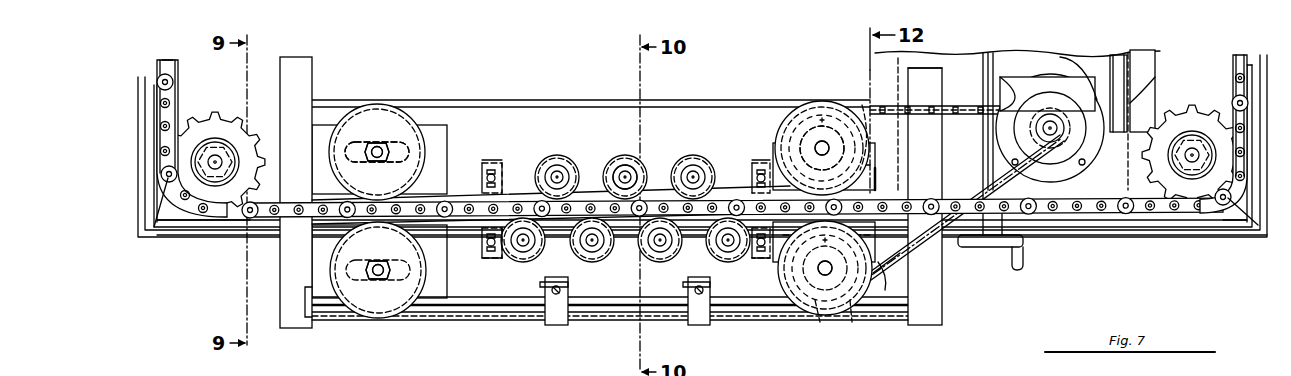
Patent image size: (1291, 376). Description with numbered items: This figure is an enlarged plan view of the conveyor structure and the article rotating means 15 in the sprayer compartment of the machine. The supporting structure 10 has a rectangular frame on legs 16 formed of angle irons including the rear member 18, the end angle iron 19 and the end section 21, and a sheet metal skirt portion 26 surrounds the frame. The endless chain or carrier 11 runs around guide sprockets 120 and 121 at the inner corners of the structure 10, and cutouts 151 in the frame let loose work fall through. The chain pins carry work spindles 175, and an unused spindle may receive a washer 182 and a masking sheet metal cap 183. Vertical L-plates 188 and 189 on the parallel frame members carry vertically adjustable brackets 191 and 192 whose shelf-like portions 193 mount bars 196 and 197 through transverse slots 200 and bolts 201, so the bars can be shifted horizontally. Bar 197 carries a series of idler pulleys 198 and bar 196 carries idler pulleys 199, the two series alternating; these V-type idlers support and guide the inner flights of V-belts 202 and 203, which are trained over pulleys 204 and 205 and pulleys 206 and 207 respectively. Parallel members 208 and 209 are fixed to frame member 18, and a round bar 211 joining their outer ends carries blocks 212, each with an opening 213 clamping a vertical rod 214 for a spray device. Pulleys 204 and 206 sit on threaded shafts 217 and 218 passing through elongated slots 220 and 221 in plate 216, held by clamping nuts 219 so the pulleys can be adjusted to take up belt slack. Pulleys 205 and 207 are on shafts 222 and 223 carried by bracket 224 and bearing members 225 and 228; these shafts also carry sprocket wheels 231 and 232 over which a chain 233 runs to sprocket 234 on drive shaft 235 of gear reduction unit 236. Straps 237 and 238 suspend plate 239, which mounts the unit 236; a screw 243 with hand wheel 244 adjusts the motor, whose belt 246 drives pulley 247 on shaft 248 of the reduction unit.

The structure 10 is at (182, 248).
The conveyor 11 is at (292, 195).
The means for rotating the work 15 is at (957, 292).
The legs 16 is at (158, 233).
The angle iron member 18 is at (214, 228).
The end angle iron 19 is at (160, 80).
The end section 21 is at (1250, 62).
The skirt portion 26 is at (139, 108).
The sprocket 120 is at (198, 118).
The sprocket 121 is at (1193, 118).
The cutouts 151 is at (180, 88).
The work carrying spindles 175 is at (168, 60).
The washer 182 is at (172, 80).
The sheet metal cap 183 is at (162, 76).
The L-plate 188 is at (484, 186).
The L-plate 189 is at (485, 243).
The brackets 191 is at (490, 282).
The brackets 192 is at (493, 158).
The shelf-like portion 193 is at (500, 165).
The bar 196 is at (545, 240).
The bar 197 is at (602, 177).
The idler pulleys 198 is at (557, 156).
The idler pulleys 199 is at (528, 262).
The transverse slots 200 is at (488, 170).
The bolts 201 is at (487, 177).
The belt 202 is at (566, 100).
The belt 203 is at (452, 312).
The pulley 204 is at (405, 130).
The pulley 205 is at (790, 115).
The pulley 206 is at (372, 305).
The pulley 207 is at (830, 298).
The member 208 is at (292, 328).
The member 209 is at (928, 326).
The round bar 211 is at (345, 325).
The blocks 212 is at (557, 326).
The opening 213 is at (565, 290).
The vertical rod 214 is at (548, 291).
The plate 216 is at (432, 128).
The shaft 217 is at (374, 140).
The shaft 218 is at (378, 285).
The clamping nuts 219 is at (382, 140).
The elongated slot 220 is at (392, 162).
The elongated slot 221 is at (372, 262).
The shaft 222 is at (822, 141).
The shaft 223 is at (828, 278).
The bracket 224 is at (878, 184).
The bearing member 225 is at (828, 128).
The bearing member 228 is at (822, 322).
The sprocket wheel 231 is at (862, 105).
The sprocket wheel 232 is at (852, 322).
The chain 233 is at (890, 275).
The sprocket 234 is at (1000, 148).
The drive shaft 235 is at (1056, 118).
The gear reduction unit 236 is at (1021, 73).
The strap 237 is at (888, 256).
The strap 238 is at (1153, 68).
The plate 239 is at (958, 60).
The screw 243 is at (985, 70).
The hand wheel 244 is at (1008, 262).
The belt 246 is at (1118, 56).
The pulley 247 is at (1156, 82).
The shaft 248 is at (1090, 90).